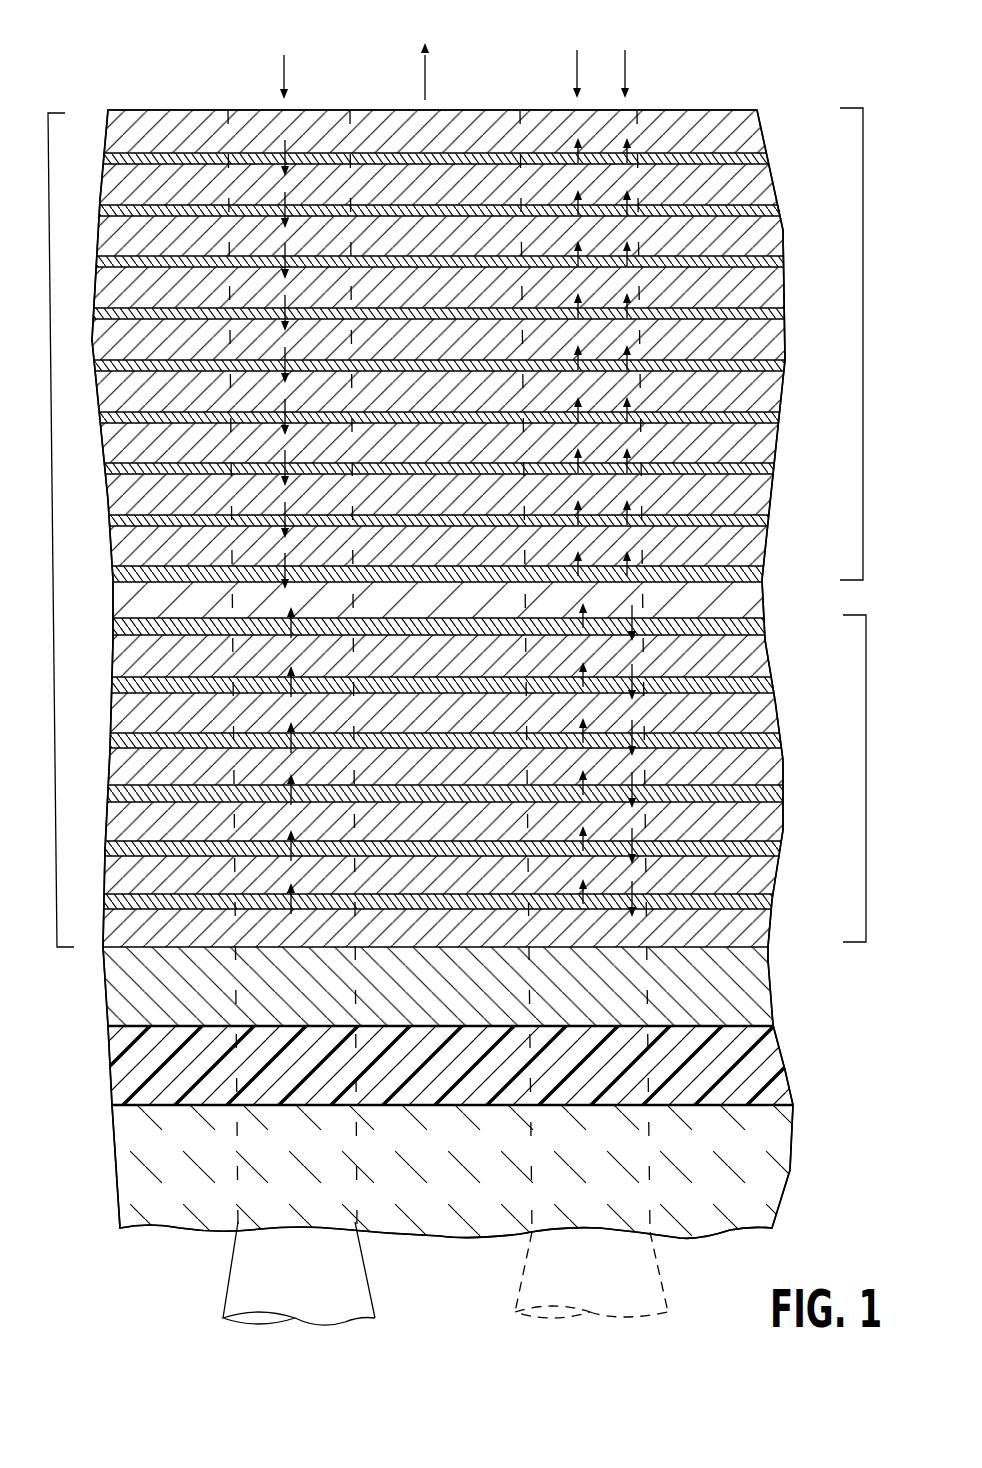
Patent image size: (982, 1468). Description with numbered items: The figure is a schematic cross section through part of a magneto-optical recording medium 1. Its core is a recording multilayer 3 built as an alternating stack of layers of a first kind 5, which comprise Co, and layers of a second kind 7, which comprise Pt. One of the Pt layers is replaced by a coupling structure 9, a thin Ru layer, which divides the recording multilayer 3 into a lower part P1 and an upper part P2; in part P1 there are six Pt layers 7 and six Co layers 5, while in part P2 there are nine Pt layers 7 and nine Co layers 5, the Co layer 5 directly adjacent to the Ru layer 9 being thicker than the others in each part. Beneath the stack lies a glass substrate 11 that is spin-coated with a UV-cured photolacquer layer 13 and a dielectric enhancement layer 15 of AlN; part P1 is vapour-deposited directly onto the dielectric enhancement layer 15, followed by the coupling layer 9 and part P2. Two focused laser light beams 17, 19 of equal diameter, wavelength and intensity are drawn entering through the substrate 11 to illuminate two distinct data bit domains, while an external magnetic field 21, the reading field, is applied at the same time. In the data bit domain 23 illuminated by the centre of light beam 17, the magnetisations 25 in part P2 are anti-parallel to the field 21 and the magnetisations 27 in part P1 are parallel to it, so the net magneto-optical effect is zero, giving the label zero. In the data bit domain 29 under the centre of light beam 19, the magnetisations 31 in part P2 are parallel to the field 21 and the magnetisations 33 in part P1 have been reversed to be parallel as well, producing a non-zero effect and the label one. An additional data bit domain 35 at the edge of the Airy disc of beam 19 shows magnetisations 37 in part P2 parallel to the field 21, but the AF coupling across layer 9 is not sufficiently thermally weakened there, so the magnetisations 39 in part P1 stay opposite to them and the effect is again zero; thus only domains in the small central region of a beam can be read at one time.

The magneto-optical recording medium 1 is at (126, 103).
The recording multilayer 3 is at (52, 559).
The layers of a first kind 5 is at (106, 905).
The layers of a second kind 7 is at (759, 924).
The coupling structure 9 is at (750, 598).
The glass substrate 11 is at (758, 1165).
The UV-cured photolacquer layer 13 is at (762, 1057).
The dielectric enhancement layer 15 is at (752, 987).
The focused light beam 17 is at (258, 1288).
The focused light beam 19 is at (652, 1280).
The external magnetic field 21 is at (441, 72).
The data bit domain 23 is at (296, 52).
The magnetisations in part P2 25 is at (283, 575).
The magnetisations in part P1 27 is at (289, 888).
The data bit domain 29 is at (588, 49).
The magnetisations in part P2 31 is at (575, 558).
The magnetisations in part P1 33 is at (580, 887).
The additional data bit domain 35 is at (643, 74).
The magnetisations in part P2 37 is at (632, 558).
The magnetisations in part P1 39 is at (636, 888).
The first part of the recording multilayer P1 is at (867, 778).
The second part of the recording multilayer P2 is at (864, 366).